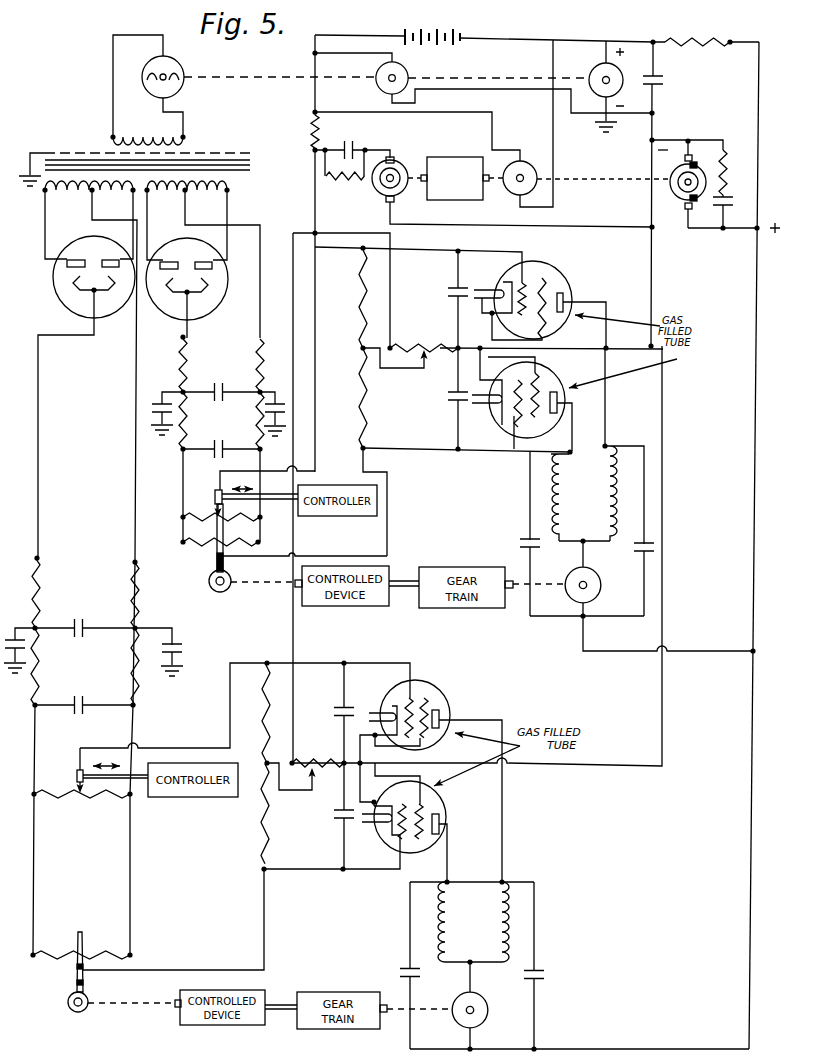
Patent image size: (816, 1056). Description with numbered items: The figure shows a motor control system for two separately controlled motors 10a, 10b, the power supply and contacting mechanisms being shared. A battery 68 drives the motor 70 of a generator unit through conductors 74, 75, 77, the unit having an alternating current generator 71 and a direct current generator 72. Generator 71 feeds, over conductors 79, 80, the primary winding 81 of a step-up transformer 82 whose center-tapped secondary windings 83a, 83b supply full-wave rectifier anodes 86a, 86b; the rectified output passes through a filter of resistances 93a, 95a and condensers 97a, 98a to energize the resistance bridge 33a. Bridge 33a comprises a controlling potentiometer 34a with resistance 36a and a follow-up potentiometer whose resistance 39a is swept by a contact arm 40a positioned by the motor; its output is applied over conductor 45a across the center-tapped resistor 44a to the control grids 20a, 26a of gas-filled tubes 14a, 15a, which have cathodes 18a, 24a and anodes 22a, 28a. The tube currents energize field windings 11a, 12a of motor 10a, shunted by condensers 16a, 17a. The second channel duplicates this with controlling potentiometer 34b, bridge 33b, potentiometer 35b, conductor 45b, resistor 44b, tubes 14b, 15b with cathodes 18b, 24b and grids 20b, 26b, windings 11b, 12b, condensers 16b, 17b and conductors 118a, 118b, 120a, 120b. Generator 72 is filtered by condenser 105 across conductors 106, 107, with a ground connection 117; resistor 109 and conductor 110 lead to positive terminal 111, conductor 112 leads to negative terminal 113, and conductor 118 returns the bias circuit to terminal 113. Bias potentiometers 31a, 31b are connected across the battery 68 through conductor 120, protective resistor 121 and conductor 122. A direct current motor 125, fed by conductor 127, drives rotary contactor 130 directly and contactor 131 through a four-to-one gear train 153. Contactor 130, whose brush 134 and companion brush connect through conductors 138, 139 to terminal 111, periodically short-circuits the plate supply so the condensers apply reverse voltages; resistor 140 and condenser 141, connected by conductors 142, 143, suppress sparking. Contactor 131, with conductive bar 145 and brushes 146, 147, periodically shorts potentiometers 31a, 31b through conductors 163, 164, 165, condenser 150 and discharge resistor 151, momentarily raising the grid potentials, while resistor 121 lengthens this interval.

The alternating current generator 71 is at (178, 70).
The conductor 79 is at (113, 97).
The conductor 80 is at (185, 123).
The primary winding 81 is at (157, 136).
The step-up transformer 82 is at (232, 152).
The center tapped secondary winding 83a is at (62, 190).
The center tapped secondary winding 83b is at (222, 194).
The rectifier anode 86a is at (72, 300).
The rectifier anode 86b is at (220, 300).
The conductor 74 is at (358, 35).
The conductor 75 is at (313, 52).
The battery 68 is at (462, 36).
The motor 70 is at (408, 73).
The conductor 77 is at (509, 89).
The conductor 122 is at (325, 95).
The protective resistor 121 is at (318, 127).
The condenser 150 is at (351, 148).
The resistor 151 is at (357, 181).
The conductor 164 is at (392, 157).
The brush 146 is at (407, 164).
The conductive bar 145 is at (458, 154).
The conductor 165 is at (320, 153).
The conductor 120 is at (315, 189).
The brush 147 is at (387, 203).
The rotary contactor 131 is at (410, 198).
The reduction gear train 153 is at (462, 200).
The direct current motor 125 is at (500, 194).
The conductor 127 is at (552, 130).
The conductor 163 is at (594, 227).
The conductor 106 is at (629, 42).
The direct current generator 72 is at (598, 71).
The ground 117 is at (600, 133).
The conductor 107 is at (635, 114).
The conductor 118 is at (652, 291).
The filter condenser 105 is at (664, 79).
The resistor 109 is at (711, 41).
The conductor 110 is at (759, 108).
The conductor 112 is at (656, 128).
The negative terminal 113 is at (652, 143).
The rotary contactor 130 is at (677, 204).
The conductor 142 is at (683, 140).
The brush 134 is at (694, 158).
The resistor 140 is at (727, 161).
The condenser 141 is at (726, 197).
The conductor 138 is at (701, 230).
The conductor 139 is at (741, 230).
The conductor 143 is at (721, 230).
The positive terminal 111 is at (758, 228).
The conductor 120a is at (289, 241).
The conductor 120b is at (391, 273).
The conductor 45b is at (315, 344).
The center tapped resistance 44b is at (362, 390).
The potentiometer 31b is at (412, 346).
The cathode 24b is at (472, 350).
The cathode 18b is at (472, 422).
The control grid 26b is at (523, 283).
The gas filled discharge tube 15b is at (558, 283).
The conductor 118b is at (586, 340).
The gas filled discharge tube 14b is at (550, 383).
The control grid 20b is at (527, 418).
The field winding 12b is at (565, 472).
The field winding 11b is at (622, 452).
The condenser 16b is at (650, 541).
The condenser 17b is at (523, 540).
The motor 10b is at (601, 573).
The conductor 118a is at (666, 564).
The controlling potentiometer 34b is at (205, 508).
The bridge circuit 33b is at (176, 530).
The potentiometer 35b is at (212, 551).
The resistance 93a is at (38, 568).
The condenser 97a is at (80, 620).
The condenser 98a is at (80, 698).
The resistance 95a is at (140, 608).
The conductor 45a is at (183, 747).
The controlling potentiometer 34a is at (67, 775).
The resistance 36a is at (70, 800).
The bridge circuit 33a is at (140, 889).
The resistance 39a is at (100, 952).
The contact arm 40a is at (73, 935).
The center tapped resistance 44a is at (263, 827).
The potentiometer 31a is at (302, 758).
The cathode 24a is at (389, 692).
The cathode 18a is at (388, 843).
The control grid 26a is at (414, 700).
The gas filled discharge tube 15a is at (433, 698).
The anode 28a is at (440, 710).
The gas filled discharge tube 14a is at (432, 797).
The control grid 20a is at (412, 840).
The anode 22a is at (440, 820).
The field winding 12a is at (452, 908).
The field winding 11a is at (509, 905).
The condenser 17a is at (407, 967).
The condenser 16a is at (537, 970).
The motor 10a is at (489, 995).